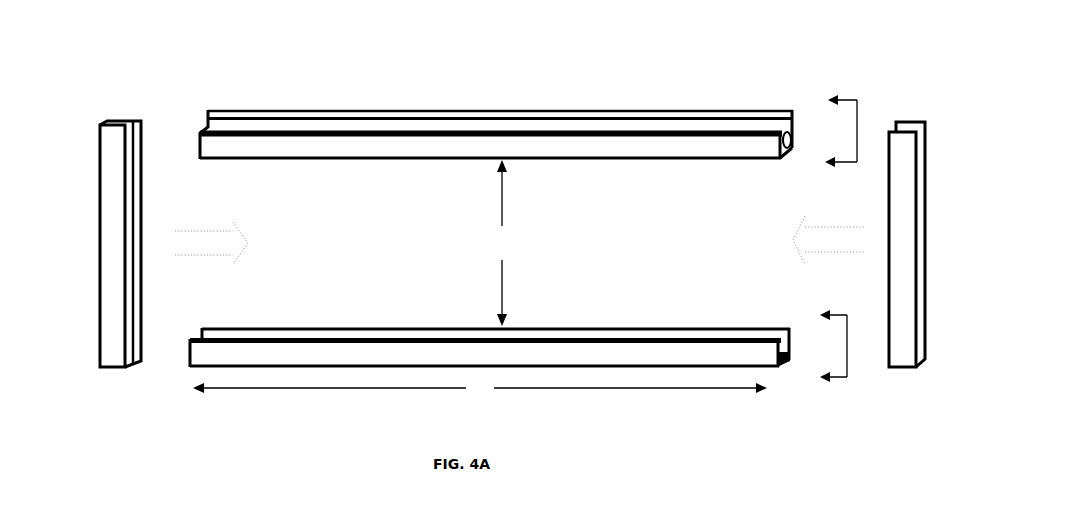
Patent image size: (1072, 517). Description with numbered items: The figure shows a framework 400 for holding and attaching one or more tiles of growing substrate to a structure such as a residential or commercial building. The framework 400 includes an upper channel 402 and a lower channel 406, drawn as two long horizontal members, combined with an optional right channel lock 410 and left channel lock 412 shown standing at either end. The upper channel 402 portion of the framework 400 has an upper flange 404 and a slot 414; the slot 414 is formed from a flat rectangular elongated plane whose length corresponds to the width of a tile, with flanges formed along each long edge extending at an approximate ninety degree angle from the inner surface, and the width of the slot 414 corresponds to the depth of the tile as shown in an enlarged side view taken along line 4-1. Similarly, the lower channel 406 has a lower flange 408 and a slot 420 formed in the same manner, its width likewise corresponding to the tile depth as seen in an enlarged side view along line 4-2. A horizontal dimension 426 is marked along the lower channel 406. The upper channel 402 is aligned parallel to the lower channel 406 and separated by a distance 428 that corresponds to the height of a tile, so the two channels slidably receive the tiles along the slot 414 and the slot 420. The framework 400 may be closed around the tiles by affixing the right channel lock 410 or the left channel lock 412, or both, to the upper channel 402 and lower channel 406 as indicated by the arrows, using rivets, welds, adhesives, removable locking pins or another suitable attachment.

The framework 400 is at (612, 76).
The upper channel 402 is at (305, 160).
The upper flange 404 is at (284, 110).
The lower channel 406 is at (358, 328).
The lower flange 408 is at (789, 363).
The right channel lock 410 is at (920, 368).
The left channel lock 412 is at (113, 368).
The slot 414 is at (806, 158).
The slot 420 is at (803, 329).
The length 426 is at (480, 388).
The distance 428 is at (503, 243).
The line 4-1 is at (855, 131).
The line 4-2 is at (848, 346).